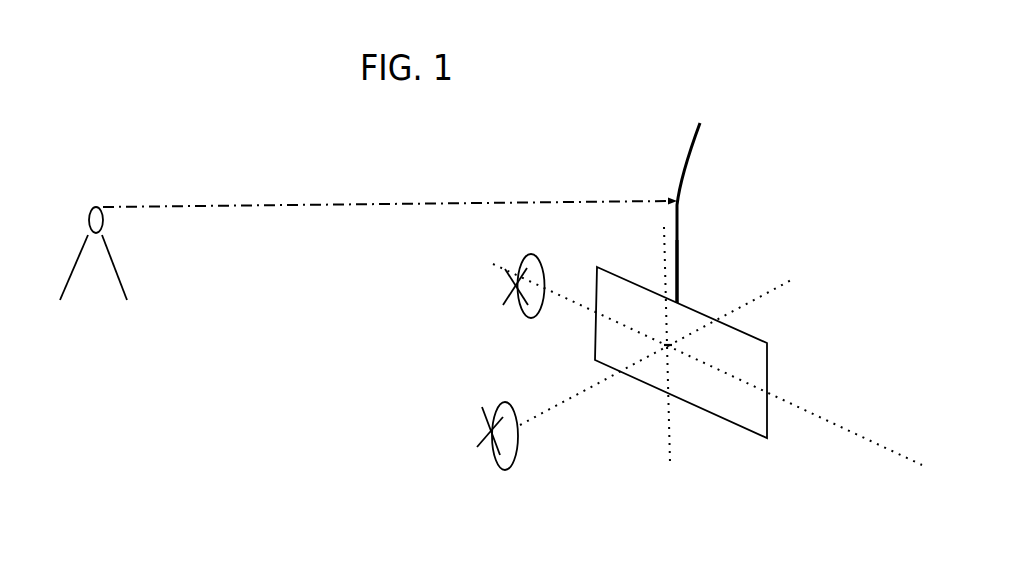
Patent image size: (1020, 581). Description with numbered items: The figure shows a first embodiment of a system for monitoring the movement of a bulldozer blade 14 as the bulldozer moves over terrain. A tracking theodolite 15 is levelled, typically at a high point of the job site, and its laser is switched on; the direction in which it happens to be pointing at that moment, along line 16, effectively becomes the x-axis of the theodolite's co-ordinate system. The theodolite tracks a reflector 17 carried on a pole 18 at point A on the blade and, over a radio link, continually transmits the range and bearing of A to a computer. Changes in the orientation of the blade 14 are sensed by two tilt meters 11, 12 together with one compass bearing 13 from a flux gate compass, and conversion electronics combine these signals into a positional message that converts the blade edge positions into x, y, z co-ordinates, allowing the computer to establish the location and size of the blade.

The tilt meter 11 is at (517, 287).
The tilt meter 12 is at (490, 432).
The compass bearing 13 is at (670, 473).
The blade 14 is at (769, 342).
The tracking theodolite 15 is at (73, 265).
The line 16 is at (233, 206).
The reflector 17 is at (694, 197).
The pole 18 is at (678, 253).